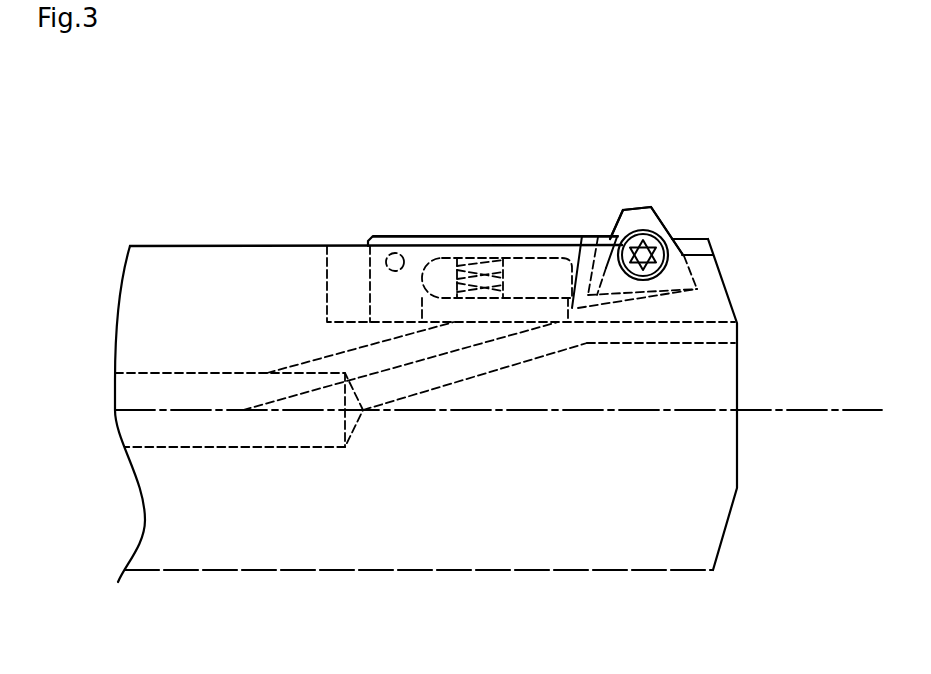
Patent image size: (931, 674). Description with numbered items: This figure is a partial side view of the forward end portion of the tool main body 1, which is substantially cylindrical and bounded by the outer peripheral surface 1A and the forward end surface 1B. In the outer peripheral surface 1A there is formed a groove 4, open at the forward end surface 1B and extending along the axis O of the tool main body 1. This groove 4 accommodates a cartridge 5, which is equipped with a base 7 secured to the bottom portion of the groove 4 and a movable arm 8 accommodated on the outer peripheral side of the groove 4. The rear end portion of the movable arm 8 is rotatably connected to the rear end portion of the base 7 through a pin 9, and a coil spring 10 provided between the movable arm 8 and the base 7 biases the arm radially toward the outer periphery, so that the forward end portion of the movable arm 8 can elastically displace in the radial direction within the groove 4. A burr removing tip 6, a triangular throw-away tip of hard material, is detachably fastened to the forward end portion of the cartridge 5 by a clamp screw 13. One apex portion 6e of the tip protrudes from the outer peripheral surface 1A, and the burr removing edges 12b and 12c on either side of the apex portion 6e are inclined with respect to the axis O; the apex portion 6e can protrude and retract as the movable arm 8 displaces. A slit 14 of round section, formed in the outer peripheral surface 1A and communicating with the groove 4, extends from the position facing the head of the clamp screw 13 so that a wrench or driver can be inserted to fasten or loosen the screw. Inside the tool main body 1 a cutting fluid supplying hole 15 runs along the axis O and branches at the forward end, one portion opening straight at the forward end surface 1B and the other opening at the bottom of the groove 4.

The tool main body 1 is at (190, 247).
The outer peripheral surface 1A is at (252, 249).
The forward end surface 1B is at (731, 285).
The groove 4 is at (715, 311).
The cartridge 5 is at (467, 236).
The burr removing tip 6 is at (687, 198).
The apex portion 6e is at (643, 207).
The base 7 is at (490, 310).
The movable arm 8 is at (505, 236).
The pin 9 is at (383, 245).
The spring 10 is at (457, 260).
The burr removing edge 12b is at (618, 235).
The burr removing edge 12c is at (667, 225).
The clamp screw 13 is at (672, 236).
The slit 14 is at (625, 240).
The cutting fluid supplying hole 15 is at (715, 335).
The axis O is at (807, 408).